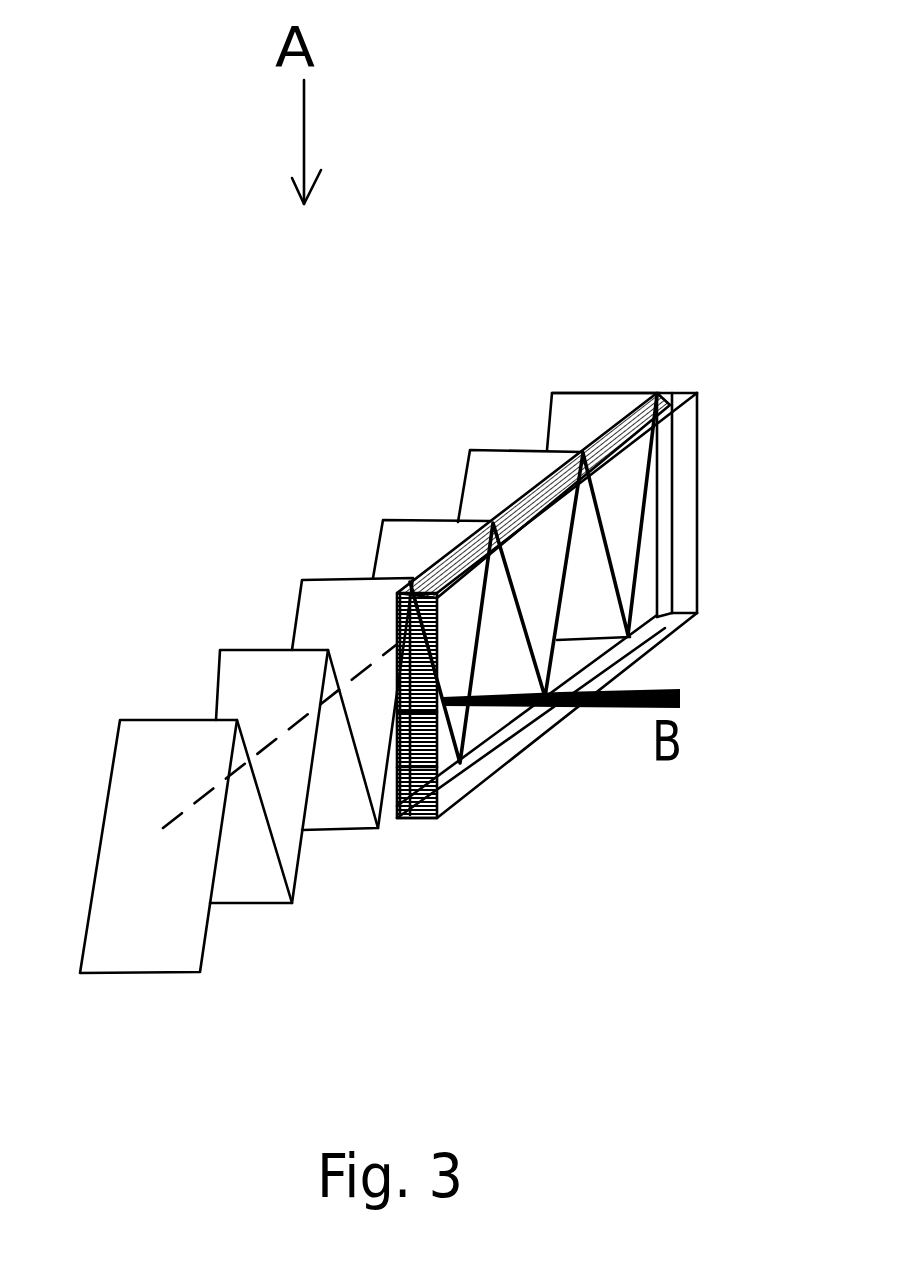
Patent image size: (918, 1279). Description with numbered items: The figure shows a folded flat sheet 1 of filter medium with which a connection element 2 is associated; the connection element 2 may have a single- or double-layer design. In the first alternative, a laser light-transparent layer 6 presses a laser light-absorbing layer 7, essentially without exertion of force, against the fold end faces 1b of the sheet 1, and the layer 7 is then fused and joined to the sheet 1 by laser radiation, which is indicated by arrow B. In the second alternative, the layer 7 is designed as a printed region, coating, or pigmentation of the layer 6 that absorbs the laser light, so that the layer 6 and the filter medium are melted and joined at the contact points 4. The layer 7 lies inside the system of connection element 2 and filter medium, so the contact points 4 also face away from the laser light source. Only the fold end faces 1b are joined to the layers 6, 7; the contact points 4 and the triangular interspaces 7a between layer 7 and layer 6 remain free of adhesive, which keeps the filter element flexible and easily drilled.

The folded flat sheet 1 is at (160, 757).
The fold end faces 1b is at (343, 707).
The connection element 2 is at (670, 393).
The contact points 4 is at (430, 812).
The laser light-transparent layer 6 is at (683, 495).
The laser light-absorbing layer 7 is at (663, 473).
The triangular interspaces 7a is at (540, 577).